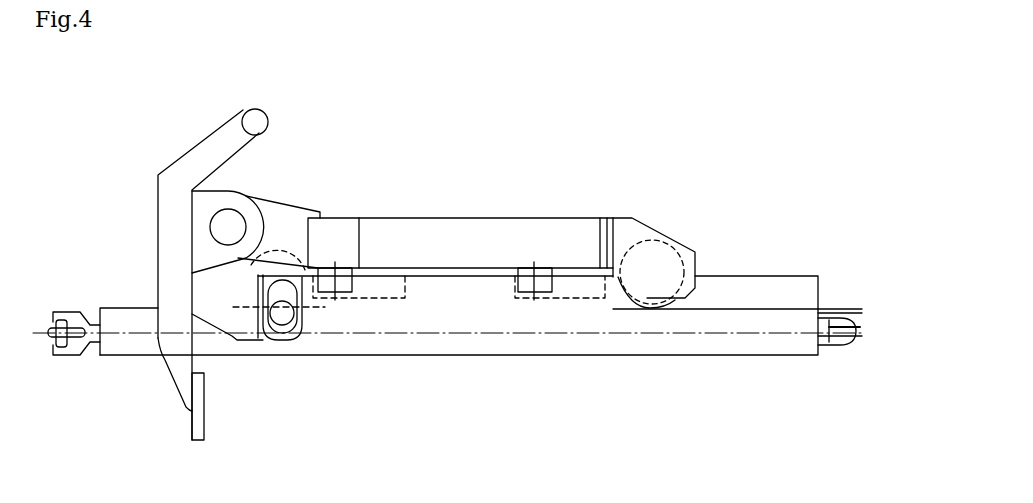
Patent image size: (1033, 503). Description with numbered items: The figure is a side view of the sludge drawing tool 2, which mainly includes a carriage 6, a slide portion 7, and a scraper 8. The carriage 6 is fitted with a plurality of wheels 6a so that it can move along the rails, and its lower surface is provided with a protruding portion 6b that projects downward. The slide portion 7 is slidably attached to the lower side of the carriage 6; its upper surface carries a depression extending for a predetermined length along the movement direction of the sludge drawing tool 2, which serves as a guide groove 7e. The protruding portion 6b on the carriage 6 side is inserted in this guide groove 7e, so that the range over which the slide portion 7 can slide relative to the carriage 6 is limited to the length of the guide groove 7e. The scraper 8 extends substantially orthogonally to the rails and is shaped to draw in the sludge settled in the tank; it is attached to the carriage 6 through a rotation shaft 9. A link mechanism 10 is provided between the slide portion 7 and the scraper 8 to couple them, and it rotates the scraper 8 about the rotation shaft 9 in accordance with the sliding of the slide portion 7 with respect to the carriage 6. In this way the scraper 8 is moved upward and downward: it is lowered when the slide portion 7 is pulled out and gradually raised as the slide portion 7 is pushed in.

The sludge drawing tool 2 is at (748, 137).
The carriage 6 is at (447, 208).
The wheels 6a is at (270, 252).
The protruding portion 6b is at (354, 279).
The slide portion 7 is at (465, 364).
The guide groove 7e is at (390, 302).
The scraper 8 is at (178, 148).
The rotation shaft 9 is at (227, 227).
The link mechanism 10 is at (283, 318).